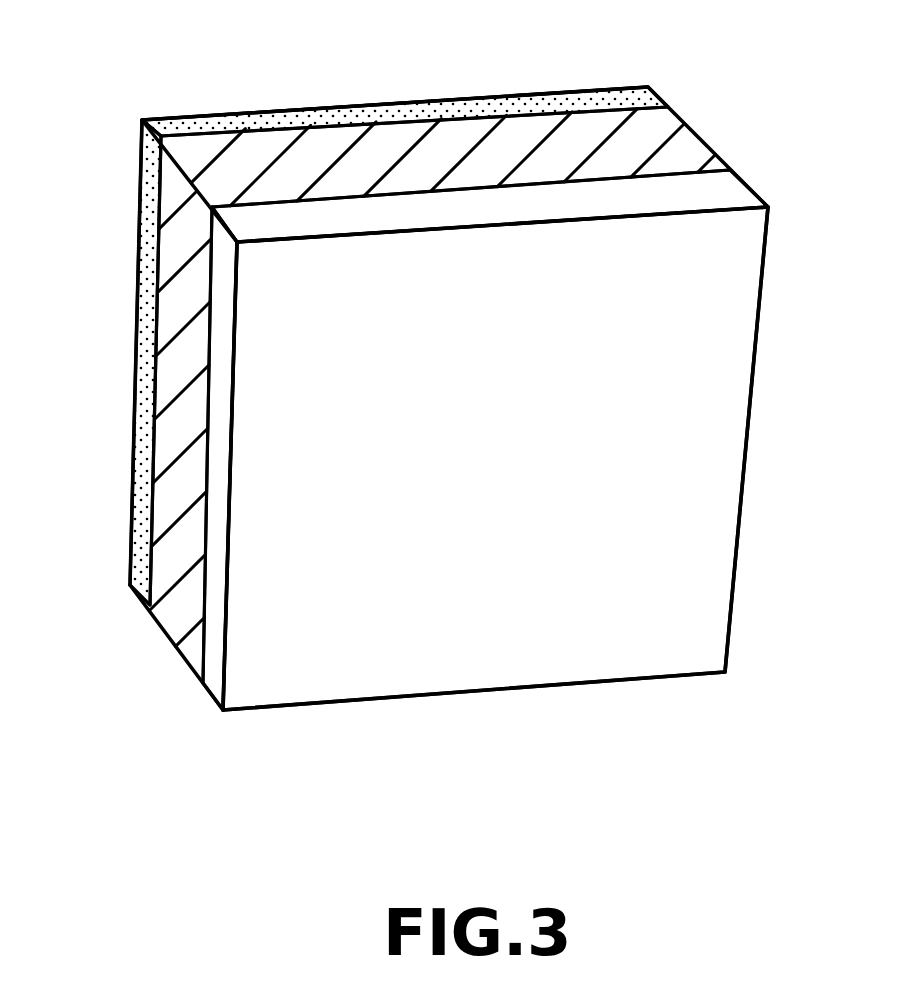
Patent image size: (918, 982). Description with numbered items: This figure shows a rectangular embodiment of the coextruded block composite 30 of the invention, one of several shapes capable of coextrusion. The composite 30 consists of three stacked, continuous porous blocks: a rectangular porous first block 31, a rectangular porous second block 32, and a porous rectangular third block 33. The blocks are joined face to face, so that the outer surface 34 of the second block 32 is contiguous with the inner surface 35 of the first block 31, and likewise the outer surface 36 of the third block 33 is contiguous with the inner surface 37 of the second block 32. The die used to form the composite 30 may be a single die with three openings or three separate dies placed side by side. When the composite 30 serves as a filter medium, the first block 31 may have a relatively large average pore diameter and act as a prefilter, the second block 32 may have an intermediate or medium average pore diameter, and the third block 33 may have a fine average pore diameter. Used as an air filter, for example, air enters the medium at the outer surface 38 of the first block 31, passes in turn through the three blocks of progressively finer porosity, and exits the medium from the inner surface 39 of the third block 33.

The coextruded block composite 30 is at (482, 447).
The first block 31 is at (717, 195).
The second block 32 is at (663, 142).
The third block 33 is at (638, 88).
The outer surface of the second block 34 is at (293, 193).
The inner surface of the first block 35 is at (235, 213).
The outer surface of the third block 36 is at (213, 113).
The inner surface of the second block 37 is at (212, 136).
The outer surface of the first block 38 is at (693, 455).
The inner surface of the third block 39 is at (418, 102).